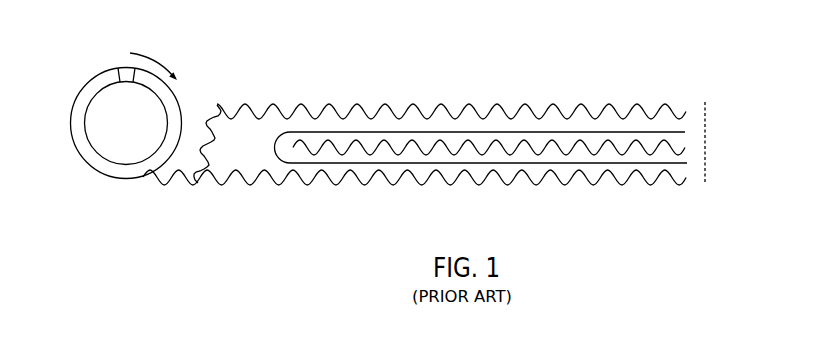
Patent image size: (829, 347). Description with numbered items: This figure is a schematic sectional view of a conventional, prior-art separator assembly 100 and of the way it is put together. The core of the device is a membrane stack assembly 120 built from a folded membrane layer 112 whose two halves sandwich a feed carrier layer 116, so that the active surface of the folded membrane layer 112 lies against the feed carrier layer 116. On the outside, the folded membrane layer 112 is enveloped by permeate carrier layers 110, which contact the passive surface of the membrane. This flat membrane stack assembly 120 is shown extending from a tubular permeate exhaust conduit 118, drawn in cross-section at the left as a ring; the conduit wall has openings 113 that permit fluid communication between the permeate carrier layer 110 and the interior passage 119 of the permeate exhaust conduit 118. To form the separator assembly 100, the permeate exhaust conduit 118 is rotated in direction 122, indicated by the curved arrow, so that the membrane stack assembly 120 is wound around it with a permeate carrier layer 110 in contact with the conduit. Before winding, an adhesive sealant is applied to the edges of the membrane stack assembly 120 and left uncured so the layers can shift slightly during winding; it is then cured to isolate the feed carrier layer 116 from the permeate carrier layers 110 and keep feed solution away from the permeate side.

The separator assembly 100 is at (690, 42).
The permeate carrier layer 110 is at (234, 170).
The folded membrane layer 112 is at (684, 128).
The openings 113 is at (122, 66).
The feed carrier layer 116 is at (685, 152).
The permeate exhaust conduit 118 is at (93, 82).
The ring opening 119 is at (126, 138).
The membrane stack assembly 120 is at (714, 139).
The direction 122 is at (148, 55).